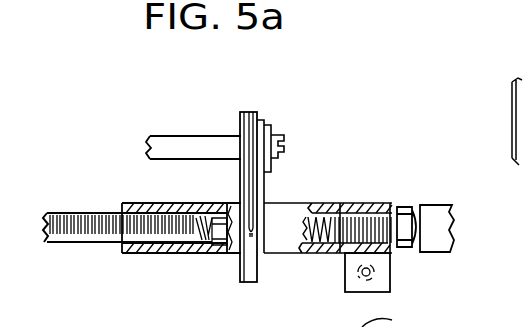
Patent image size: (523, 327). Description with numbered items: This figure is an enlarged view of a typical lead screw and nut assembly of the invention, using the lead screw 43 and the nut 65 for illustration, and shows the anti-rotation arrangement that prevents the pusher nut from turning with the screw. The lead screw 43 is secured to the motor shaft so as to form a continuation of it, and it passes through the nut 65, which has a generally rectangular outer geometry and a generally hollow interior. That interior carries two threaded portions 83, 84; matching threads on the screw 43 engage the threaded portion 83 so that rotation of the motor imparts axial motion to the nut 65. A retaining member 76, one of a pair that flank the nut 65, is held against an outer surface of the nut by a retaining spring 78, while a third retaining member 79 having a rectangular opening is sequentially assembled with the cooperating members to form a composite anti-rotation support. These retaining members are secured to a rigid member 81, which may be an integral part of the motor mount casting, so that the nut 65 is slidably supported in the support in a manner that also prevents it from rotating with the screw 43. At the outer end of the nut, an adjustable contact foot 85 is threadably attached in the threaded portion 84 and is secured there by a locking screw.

The lead screw 43 is at (84, 212).
The nut 65 is at (288, 203).
The retaining member 76 is at (242, 120).
The retaining spring 78 is at (250, 110).
The third retaining member 79 is at (265, 263).
The rigid member 81 is at (178, 134).
The threaded portion 83 is at (207, 254).
The threaded portion 84 is at (312, 253).
The adjustable contact foot 85 is at (405, 210).